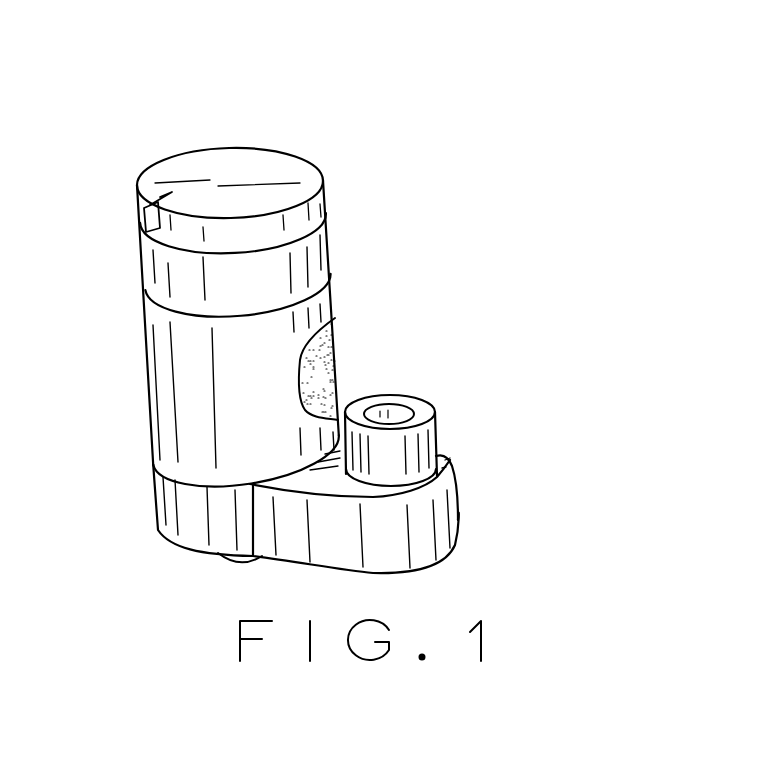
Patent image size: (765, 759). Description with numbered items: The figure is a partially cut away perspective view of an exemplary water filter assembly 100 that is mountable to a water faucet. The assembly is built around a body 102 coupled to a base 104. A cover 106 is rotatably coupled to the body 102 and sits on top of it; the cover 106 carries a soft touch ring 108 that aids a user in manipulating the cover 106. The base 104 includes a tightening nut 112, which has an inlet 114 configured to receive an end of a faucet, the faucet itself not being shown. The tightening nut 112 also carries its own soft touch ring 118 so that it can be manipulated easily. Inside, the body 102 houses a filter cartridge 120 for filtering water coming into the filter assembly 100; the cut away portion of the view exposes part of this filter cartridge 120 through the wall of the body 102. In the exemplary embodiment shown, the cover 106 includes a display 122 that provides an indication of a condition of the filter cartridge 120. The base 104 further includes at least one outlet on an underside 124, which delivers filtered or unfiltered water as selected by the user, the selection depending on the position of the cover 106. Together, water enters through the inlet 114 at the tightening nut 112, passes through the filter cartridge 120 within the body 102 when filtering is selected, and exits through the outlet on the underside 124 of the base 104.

The water filter assembly 100 is at (314, 95).
The body 102 is at (149, 404).
The base 104 is at (157, 497).
The cover 106 is at (323, 173).
The soft touch ring 108 is at (327, 262).
The tightening nut 112 is at (433, 404).
The inlet 114 is at (397, 413).
The soft touch ring 118 is at (438, 440).
The filter cartridge 120 is at (338, 356).
The display 122 is at (148, 205).
The underside 124 is at (237, 557).